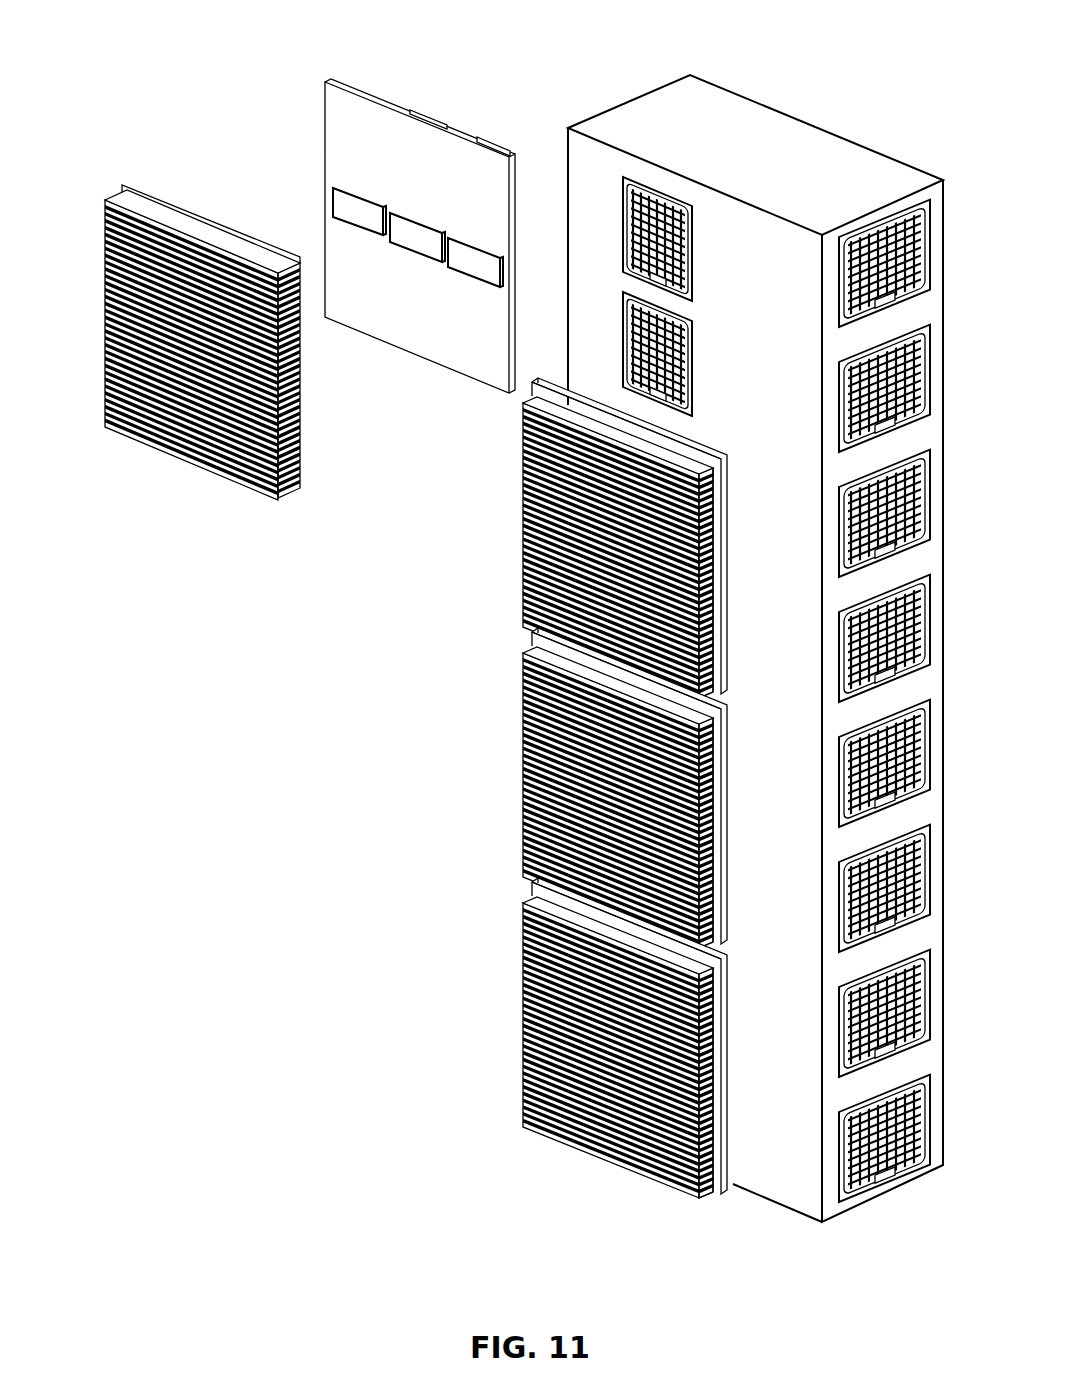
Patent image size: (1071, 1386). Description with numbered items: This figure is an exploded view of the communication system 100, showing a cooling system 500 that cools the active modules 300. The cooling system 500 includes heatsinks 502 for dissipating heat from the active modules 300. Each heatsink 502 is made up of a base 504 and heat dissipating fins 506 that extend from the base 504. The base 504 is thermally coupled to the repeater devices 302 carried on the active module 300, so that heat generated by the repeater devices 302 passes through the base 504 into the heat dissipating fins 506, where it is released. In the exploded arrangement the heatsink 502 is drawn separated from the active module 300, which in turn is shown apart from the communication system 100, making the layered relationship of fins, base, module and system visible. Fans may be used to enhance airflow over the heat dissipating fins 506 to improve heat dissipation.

The communication system 100 is at (308, 46).
The active module 300 is at (403, 225).
The repeater device 302 is at (347, 208).
The cooling system 500 is at (196, 338).
The heatsink 502 is at (196, 377).
The base 504 is at (218, 228).
The heat dissipating fins 506 is at (135, 283).